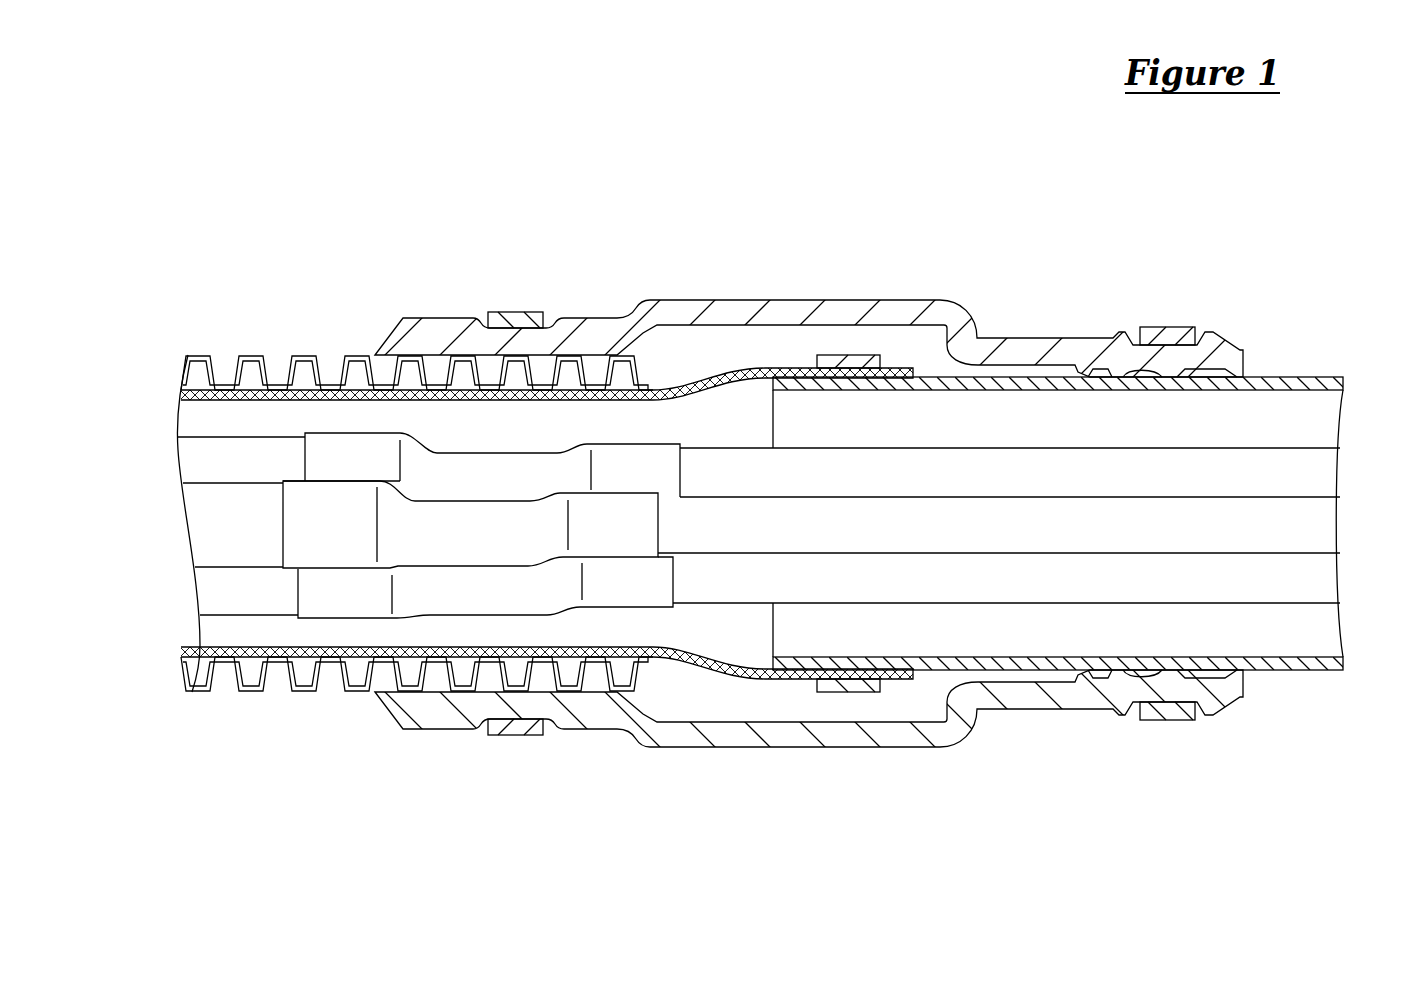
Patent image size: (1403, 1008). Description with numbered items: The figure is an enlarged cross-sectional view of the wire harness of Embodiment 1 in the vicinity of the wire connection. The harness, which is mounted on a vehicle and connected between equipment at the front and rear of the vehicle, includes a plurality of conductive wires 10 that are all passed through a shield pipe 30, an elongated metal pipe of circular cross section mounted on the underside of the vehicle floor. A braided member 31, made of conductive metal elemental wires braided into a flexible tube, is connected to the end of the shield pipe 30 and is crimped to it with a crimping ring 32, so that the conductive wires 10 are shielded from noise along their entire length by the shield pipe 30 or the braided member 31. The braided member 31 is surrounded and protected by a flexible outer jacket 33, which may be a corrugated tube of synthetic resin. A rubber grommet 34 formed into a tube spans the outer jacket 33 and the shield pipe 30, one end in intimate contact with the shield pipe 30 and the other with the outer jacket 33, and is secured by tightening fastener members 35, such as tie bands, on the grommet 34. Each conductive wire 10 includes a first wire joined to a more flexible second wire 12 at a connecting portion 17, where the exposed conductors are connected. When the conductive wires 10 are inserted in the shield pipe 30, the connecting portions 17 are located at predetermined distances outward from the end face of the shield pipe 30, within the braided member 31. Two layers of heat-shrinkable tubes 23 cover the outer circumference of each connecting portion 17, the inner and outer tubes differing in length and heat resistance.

The connector assembly 1 is at (1290, 470).
The conductive wire 10 is at (1032, 430).
The second wire 12 is at (200, 523).
The connecting portion 17 is at (544, 434).
The shrinkable tube 23 is at (462, 596).
The shield pipe 30 is at (1292, 377).
The braided member 31 is at (302, 393).
The crimping ring 32 is at (848, 355).
The outer jacket 33 is at (352, 358).
The grommet 34 is at (752, 748).
The fastener member 35 is at (508, 736).